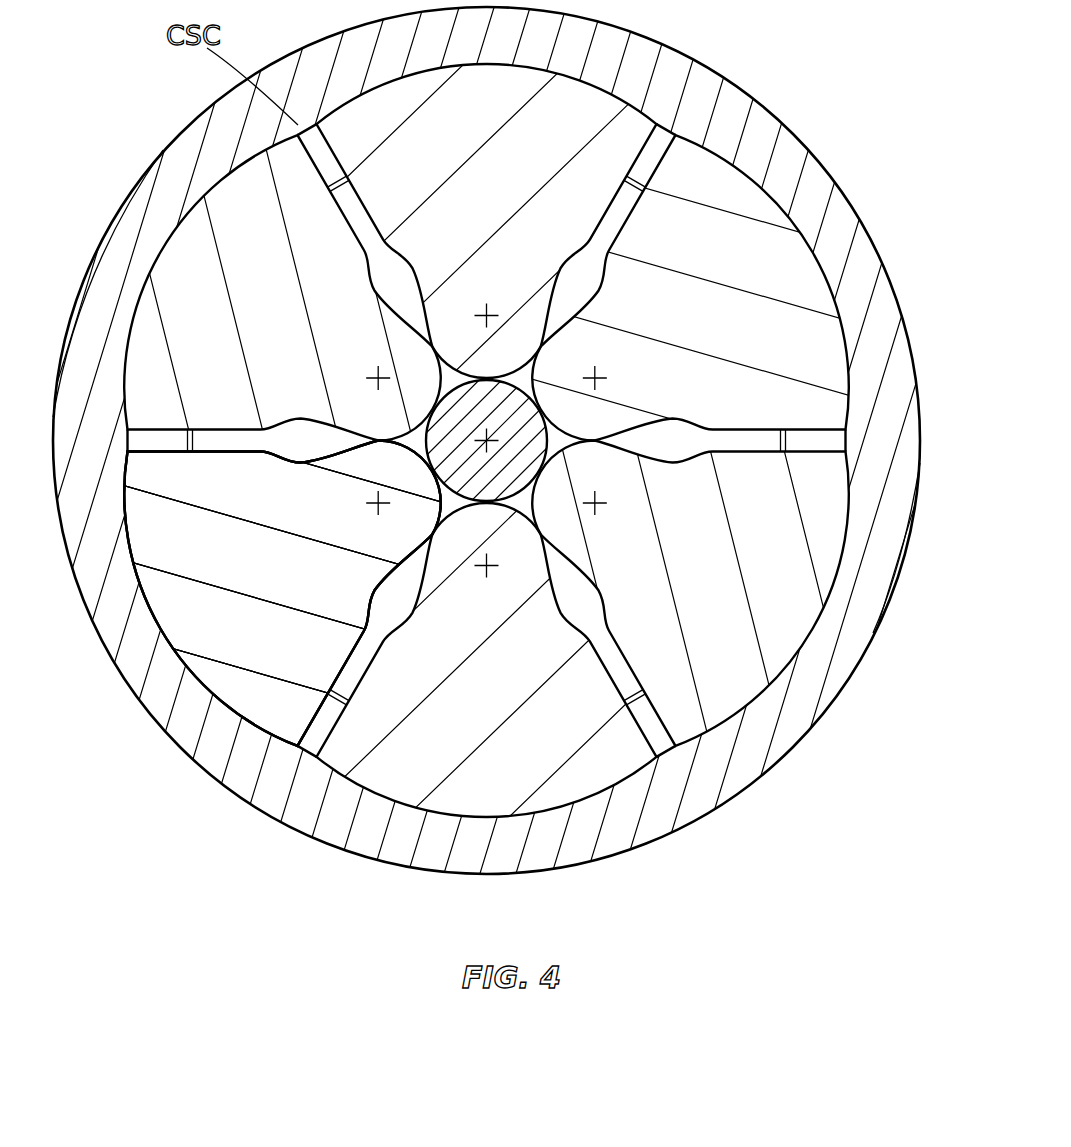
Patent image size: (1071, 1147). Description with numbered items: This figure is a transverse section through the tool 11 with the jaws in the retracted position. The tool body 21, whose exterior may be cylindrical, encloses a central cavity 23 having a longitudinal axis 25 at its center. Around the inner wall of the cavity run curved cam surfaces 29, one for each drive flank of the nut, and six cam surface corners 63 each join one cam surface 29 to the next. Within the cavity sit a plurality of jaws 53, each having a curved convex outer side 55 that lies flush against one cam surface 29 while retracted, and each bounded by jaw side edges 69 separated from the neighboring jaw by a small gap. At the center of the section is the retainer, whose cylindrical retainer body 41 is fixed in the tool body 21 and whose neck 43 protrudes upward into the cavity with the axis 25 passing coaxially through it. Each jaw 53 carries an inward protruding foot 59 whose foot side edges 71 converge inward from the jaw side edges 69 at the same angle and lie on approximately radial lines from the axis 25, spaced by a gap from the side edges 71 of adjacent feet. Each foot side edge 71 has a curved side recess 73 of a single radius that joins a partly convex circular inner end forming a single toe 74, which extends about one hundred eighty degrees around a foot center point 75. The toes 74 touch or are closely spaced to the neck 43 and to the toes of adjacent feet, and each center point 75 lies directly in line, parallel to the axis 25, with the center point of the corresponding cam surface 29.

The tool 11 is at (790, 125).
The tool body 21 is at (793, 737).
The central cavity 23 is at (563, 806).
The longitudinal axis 25 is at (486, 440).
The cam surfaces 29 is at (238, 698).
The retainer body 41 is at (663, 160).
The neck 43 is at (438, 500).
The jaws 53 is at (165, 237).
The curved convex outer side 55 is at (175, 657).
The foot 59 is at (443, 742).
The cam surface corners 63 is at (663, 743).
The jaw side edges 69 is at (300, 740).
The foot side edges 71 is at (630, 690).
The curved side recess 73 is at (684, 458).
The toe 74 is at (528, 504).
The foot center point 75 is at (597, 504).